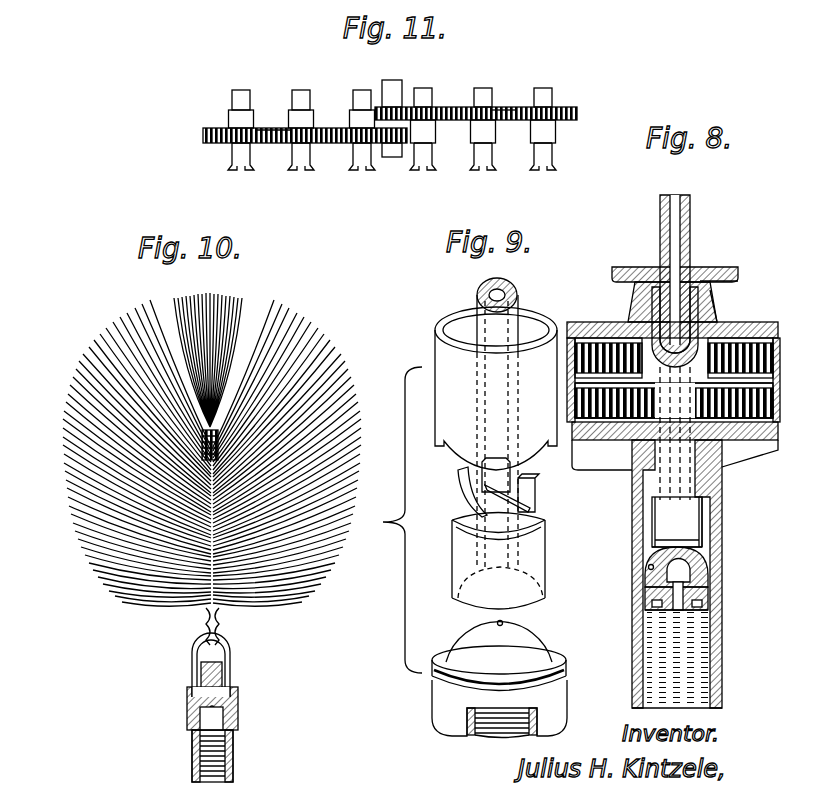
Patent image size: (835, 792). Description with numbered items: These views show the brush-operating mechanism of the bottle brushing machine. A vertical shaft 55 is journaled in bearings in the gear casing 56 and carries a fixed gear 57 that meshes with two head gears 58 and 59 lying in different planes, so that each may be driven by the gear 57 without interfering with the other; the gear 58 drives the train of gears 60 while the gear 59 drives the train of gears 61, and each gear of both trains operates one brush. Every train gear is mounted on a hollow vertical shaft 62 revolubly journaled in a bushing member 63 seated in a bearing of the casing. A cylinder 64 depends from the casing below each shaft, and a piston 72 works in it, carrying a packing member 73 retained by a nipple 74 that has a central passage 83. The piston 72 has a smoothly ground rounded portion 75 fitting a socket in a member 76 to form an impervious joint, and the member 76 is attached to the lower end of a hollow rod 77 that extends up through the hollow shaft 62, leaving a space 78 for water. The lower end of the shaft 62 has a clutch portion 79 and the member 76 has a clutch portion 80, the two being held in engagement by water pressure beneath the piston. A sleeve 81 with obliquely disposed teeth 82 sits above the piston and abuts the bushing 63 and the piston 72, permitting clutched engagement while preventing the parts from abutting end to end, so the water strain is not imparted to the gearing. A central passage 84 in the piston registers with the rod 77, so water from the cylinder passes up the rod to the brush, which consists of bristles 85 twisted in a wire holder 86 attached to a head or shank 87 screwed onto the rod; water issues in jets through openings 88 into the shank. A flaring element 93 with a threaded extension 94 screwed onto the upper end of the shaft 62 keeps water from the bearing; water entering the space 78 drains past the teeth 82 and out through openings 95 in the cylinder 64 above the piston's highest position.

In FIG. 11, the shaft 55 is at (393, 92).
In FIG. 8, the gear casing 56 is at (605, 326).
In FIG. 11, the gear 57 is at (398, 157).
In FIG. 8, the gear 57 is at (578, 452).
In FIG. 11, the head gear 58 is at (345, 128).
In FIG. 8, the head gear 58 is at (632, 458).
In FIG. 11, the head gear 59 is at (437, 107).
In FIG. 8, the head gear 59 is at (590, 326).
In FIG. 11, the train of gears 60 is at (280, 128).
In FIG. 11, the train of gears 61 is at (500, 113).
In FIG. 11, the hollow vertical shaft 62 is at (300, 97).
In FIG. 8, the hollow vertical shaft 62 is at (720, 294).
In FIG. 8, the bushing member 63 is at (732, 326).
In FIG. 8, the cylinder 64 is at (715, 648).
In FIG. 8, the piston 72 is at (707, 573).
In FIG. 9, the piston 72 is at (563, 670).
In FIG. 8, the packing member 73 is at (645, 600).
In FIG. 9, the packing member 73 is at (560, 700).
In FIG. 8, the nipple 74 is at (673, 612).
In FIG. 9, the nipple 74 is at (502, 718).
In FIG. 8, the rounded portion 75 is at (667, 574).
In FIG. 9, the rounded portion 75 is at (523, 647).
In FIG. 8, the clutch member 76 is at (710, 541).
In FIG. 9, the clutch member 76 is at (498, 561).
In FIG. 8, the hollow rod 77 is at (690, 222).
In FIG. 9, the hollow rod 77 is at (512, 312).
In FIG. 8, the space 78 is at (695, 278).
In FIG. 11, the clutch portion 79 is at (302, 170).
In FIG. 8, the clutch portion 79 is at (667, 510).
In FIG. 8, the clutch portion 80 is at (653, 518).
In FIG. 9, the clutch portion 80 is at (462, 498).
In FIG. 8, the sleeve 81 is at (643, 536).
In FIG. 9, the sleeve 81 is at (496, 372).
In FIG. 8, the teeth 82 is at (705, 562).
In FIG. 9, the teeth 82 is at (437, 448).
In FIG. 8, the central passage 83 is at (710, 613).
In FIG. 8, the central passage 84 is at (702, 553).
In FIG. 9, the central passage 84 is at (503, 623).
In FIG. 10, the bristles 85 is at (185, 307).
In FIG. 10, the wire holder 86 is at (205, 623).
In FIG. 10, the head or shank 87 is at (233, 741).
In FIG. 10, the openings 88 is at (210, 709).
In FIG. 8, the flaring element 93 is at (702, 267).
In FIG. 8, the threaded extension 94 is at (720, 281).
In FIG. 8, the openings 95 is at (648, 567).